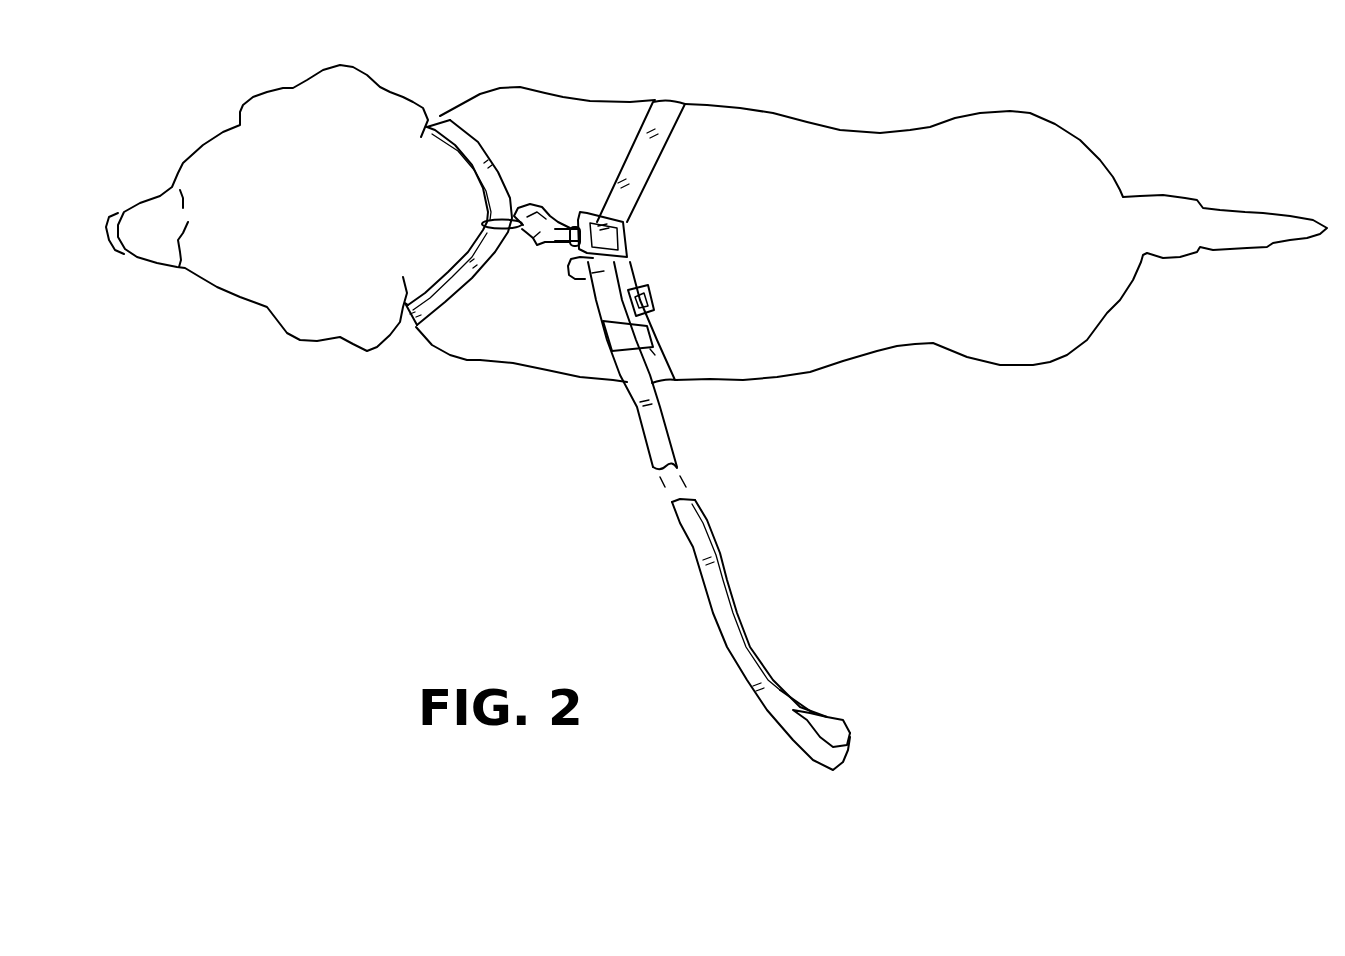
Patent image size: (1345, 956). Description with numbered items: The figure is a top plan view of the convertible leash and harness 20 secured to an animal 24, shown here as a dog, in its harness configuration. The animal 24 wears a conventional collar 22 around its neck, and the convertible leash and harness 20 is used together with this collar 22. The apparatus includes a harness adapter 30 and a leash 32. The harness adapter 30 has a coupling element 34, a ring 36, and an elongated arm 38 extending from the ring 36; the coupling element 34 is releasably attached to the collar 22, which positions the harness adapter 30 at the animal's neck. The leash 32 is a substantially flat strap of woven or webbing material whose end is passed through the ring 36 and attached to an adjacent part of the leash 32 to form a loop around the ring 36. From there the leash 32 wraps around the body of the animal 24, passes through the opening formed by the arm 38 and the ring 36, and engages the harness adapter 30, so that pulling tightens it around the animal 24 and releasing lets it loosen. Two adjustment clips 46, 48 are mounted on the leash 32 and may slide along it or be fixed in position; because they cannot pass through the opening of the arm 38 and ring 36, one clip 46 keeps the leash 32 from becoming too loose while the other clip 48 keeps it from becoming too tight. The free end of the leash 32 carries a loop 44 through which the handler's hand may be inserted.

The convertible leash and harness 20 is at (506, 140).
The collar 22 is at (449, 293).
The animal 24 is at (293, 105).
The harness adapter 30 is at (551, 206).
The leash 32 is at (670, 105).
The coupling element 34 is at (535, 233).
The ring 36 is at (632, 230).
The arm 38 is at (568, 260).
The loop 44 is at (840, 720).
The adjustment clip 46 is at (604, 337).
The adjustment clip 48 is at (652, 294).